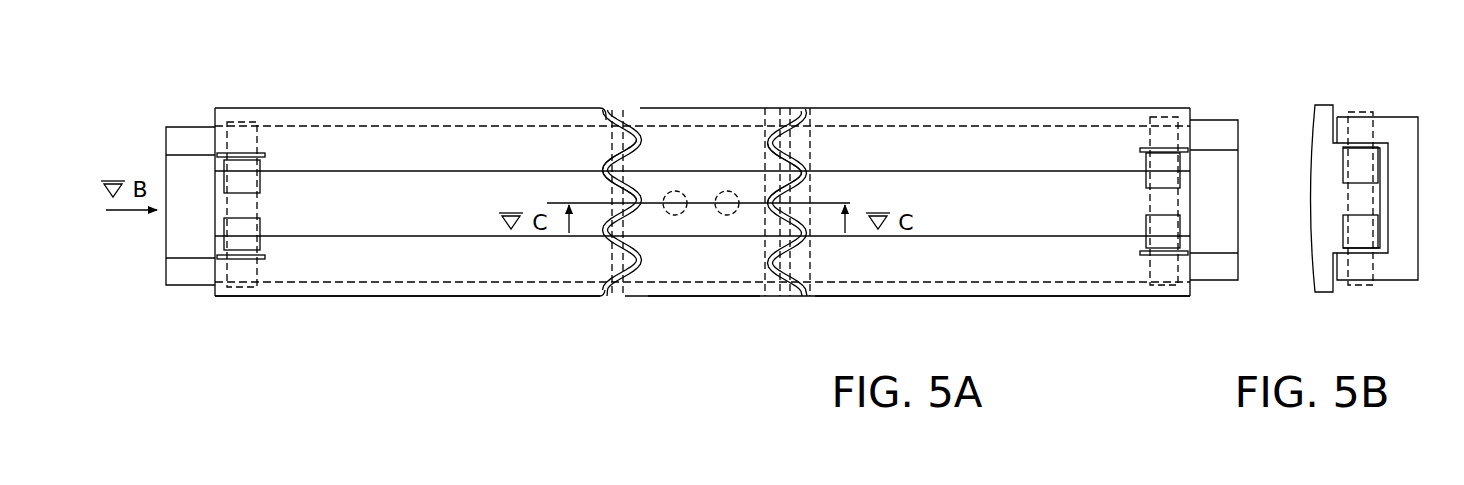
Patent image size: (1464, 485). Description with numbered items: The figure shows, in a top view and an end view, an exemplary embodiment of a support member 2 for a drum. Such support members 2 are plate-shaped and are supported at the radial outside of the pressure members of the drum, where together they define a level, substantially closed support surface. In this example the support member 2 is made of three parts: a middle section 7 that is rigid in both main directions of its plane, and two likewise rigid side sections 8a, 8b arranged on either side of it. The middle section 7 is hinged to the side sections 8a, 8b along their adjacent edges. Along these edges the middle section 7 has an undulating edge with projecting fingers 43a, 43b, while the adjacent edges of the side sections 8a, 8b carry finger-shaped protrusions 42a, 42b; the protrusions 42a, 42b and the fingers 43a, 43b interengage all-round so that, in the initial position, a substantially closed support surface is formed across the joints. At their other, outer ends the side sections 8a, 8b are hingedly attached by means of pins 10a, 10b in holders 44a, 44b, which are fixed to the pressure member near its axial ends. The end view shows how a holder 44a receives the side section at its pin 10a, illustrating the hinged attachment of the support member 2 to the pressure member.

In FIG. 5A, the support member 2 is at (945, 85).
In FIG. 5A, the middle section 7 is at (702, 262).
In FIG. 5A, the side section 8a is at (962, 258).
In FIG. 5A, the side section 8b is at (477, 263).
In FIG. 5A, the hinge pin 10a is at (1165, 133).
In FIG. 5B, the hinge pin 10a is at (1360, 198).
In FIG. 5A, the hinge pin 10b is at (242, 138).
In FIG. 5A, the finger-shaped protrusion 42a is at (797, 143).
In FIG. 5A, the finger-shaped protrusion 42b is at (613, 147).
In FIG. 5A, the projecting finger 43a is at (786, 145).
In FIG. 5A, the projecting finger 43b is at (641, 135).
In FIG. 5A, the holder 44a is at (1210, 265).
In FIG. 5B, the holder 44a is at (1400, 263).
In FIG. 5A, the holder 44b is at (185, 272).